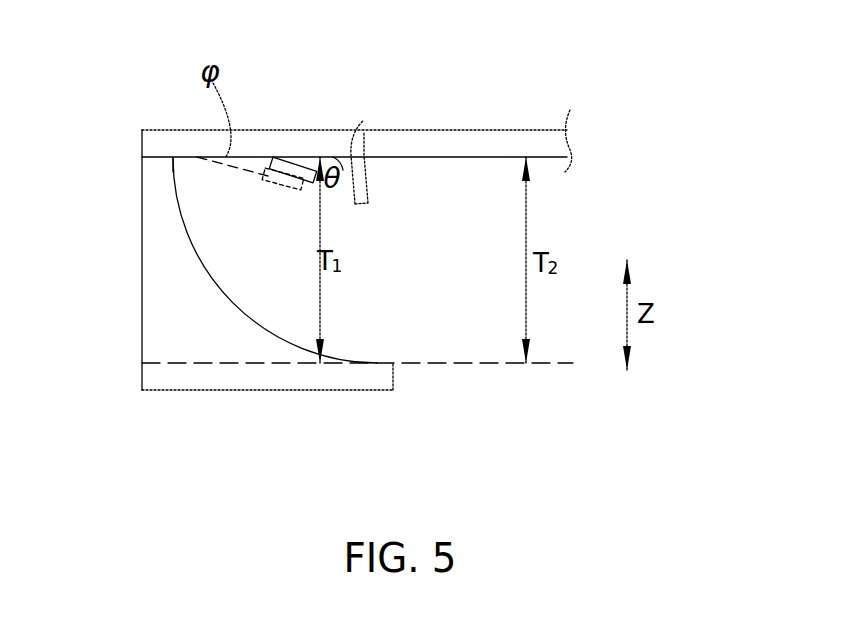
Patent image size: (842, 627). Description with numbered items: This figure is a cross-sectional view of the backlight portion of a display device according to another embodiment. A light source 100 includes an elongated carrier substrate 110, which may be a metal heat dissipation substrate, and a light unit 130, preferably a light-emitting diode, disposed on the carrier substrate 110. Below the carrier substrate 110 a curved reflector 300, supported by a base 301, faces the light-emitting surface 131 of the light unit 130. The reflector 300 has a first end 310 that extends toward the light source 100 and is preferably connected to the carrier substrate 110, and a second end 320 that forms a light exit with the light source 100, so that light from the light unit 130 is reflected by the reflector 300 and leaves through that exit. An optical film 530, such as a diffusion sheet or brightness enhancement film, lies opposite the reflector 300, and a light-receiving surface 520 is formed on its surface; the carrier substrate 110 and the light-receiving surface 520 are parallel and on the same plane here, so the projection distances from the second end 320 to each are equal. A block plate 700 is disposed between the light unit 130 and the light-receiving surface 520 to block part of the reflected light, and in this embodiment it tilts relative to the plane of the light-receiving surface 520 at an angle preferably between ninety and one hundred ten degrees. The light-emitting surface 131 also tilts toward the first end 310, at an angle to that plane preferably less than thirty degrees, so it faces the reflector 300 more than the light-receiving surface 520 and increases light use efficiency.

The light source 100 is at (360, 54).
The carrier substrate 110 is at (335, 147).
The light unit 130 is at (291, 164).
The light-emitting surface 131 is at (266, 180).
The reflector 300 is at (252, 310).
The base 301 is at (270, 372).
The first end 310 is at (173, 158).
The second end 320 is at (393, 363).
The light-receiving surface 520 is at (547, 157).
The optical film 530 is at (503, 143).
The block plate 700 is at (364, 133).